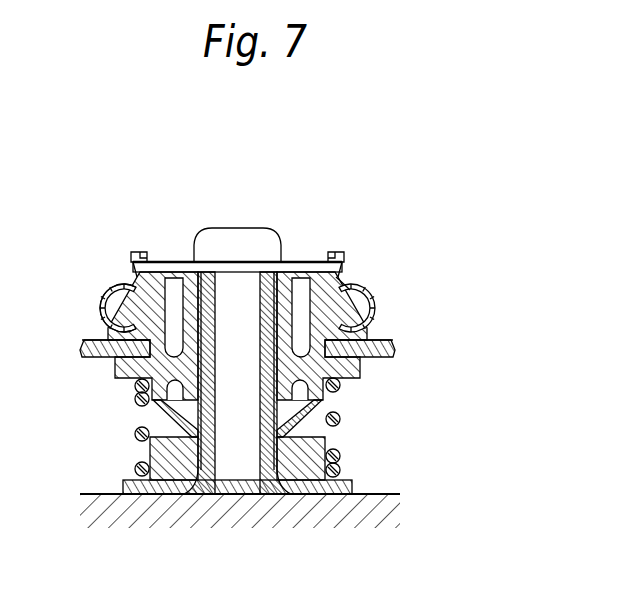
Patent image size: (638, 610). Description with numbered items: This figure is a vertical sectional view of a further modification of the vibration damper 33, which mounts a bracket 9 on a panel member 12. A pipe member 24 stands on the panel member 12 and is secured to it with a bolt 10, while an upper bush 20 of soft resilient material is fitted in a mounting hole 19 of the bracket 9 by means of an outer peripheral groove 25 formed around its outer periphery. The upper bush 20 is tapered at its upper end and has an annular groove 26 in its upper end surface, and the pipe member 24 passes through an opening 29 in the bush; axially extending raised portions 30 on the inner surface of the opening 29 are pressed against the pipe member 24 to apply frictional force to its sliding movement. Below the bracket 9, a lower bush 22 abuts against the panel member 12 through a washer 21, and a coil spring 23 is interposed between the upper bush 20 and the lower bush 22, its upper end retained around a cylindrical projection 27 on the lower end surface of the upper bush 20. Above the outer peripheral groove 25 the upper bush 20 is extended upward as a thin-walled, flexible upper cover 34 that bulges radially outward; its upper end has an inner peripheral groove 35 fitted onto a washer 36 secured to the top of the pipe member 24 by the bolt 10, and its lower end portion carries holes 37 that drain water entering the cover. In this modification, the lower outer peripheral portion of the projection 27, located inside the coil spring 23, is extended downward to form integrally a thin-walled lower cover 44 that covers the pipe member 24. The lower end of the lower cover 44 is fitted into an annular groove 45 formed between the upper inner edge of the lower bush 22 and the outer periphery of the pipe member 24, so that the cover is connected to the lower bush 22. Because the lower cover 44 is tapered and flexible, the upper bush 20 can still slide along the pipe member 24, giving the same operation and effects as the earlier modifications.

The bracket 9 is at (383, 350).
The bolt 10 is at (247, 237).
The panel member 12 is at (386, 495).
The mounting hole 19 is at (103, 300).
The upper bush 20 is at (130, 290).
The washer 21 is at (174, 494).
The lower bush 22 is at (148, 448).
The coil spring 23 is at (344, 455).
The pipe member 24 is at (281, 263).
The outer peripheral groove 25 is at (112, 340).
The annular groove 26 is at (172, 280).
The cylindrical projection 27 is at (157, 401).
The opening 29 is at (216, 287).
The raised portions 30 is at (340, 278).
The vibration damper 33 is at (237, 360).
The upper cover 34 is at (375, 300).
The inner peripheral groove 35 is at (318, 263).
The washer 36 is at (296, 272).
The holes 37 is at (110, 338).
The lower cover 44 is at (312, 432).
The annular groove 45 is at (190, 433).